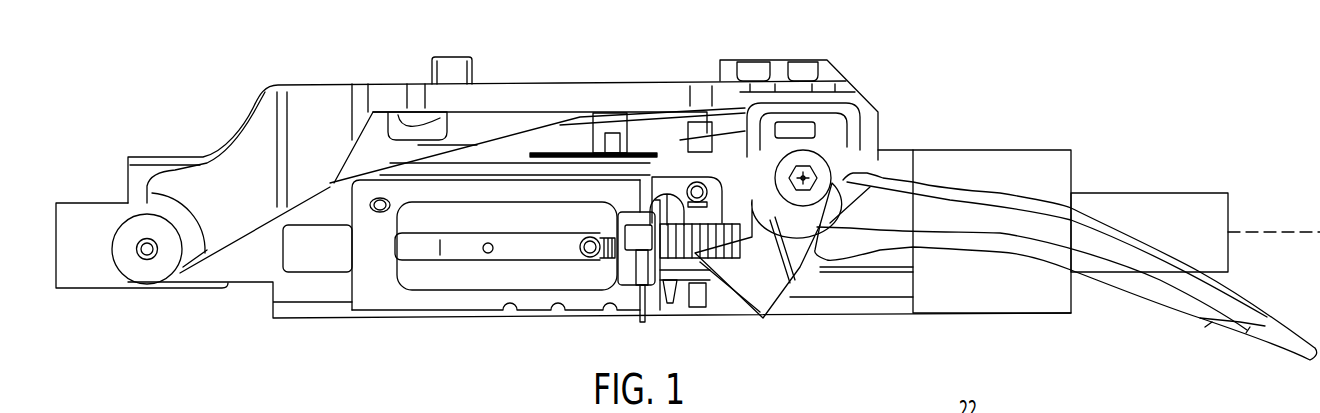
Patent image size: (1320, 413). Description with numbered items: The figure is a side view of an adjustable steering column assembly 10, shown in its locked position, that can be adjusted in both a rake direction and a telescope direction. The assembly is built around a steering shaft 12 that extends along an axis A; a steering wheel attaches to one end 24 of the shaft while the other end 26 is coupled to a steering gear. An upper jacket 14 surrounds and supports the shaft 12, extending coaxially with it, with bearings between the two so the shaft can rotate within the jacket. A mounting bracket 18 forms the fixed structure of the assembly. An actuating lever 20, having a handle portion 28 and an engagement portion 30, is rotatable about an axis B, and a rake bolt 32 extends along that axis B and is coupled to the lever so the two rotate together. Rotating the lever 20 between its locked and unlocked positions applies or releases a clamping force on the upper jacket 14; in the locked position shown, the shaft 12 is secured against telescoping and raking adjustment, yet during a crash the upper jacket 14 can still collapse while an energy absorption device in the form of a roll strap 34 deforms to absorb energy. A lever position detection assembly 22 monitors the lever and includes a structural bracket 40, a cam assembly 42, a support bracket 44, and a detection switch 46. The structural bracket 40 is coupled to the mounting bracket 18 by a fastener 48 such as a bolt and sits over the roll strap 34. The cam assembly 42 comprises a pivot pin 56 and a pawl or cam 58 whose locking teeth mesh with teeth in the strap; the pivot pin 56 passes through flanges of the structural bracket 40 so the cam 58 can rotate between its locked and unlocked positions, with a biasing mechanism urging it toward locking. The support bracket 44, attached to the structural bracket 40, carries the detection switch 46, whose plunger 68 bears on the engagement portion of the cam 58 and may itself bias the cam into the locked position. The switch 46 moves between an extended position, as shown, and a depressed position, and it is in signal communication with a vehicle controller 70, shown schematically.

The adjustable steering column assembly 10 is at (995, 86).
The steering shaft 12 is at (1147, 203).
The upper jacket 14 is at (1025, 160).
The mounting bracket 18 is at (527, 82).
The actuating lever 20 is at (975, 256).
The lever position detection assembly 22 is at (697, 327).
The end 24 is at (1234, 173).
The other end 26 is at (90, 198).
The handle portion 28 is at (1290, 316).
The engagement portion 30 is at (716, 278).
The rake bolt 32 is at (812, 172).
The roll strap 34 is at (603, 255).
The structural bracket 40 is at (373, 297).
The cam assembly 42 is at (737, 215).
The support bracket 44 is at (627, 282).
The detection switch 46 is at (639, 238).
The fastener 48 is at (699, 181).
The pivot pin 56 is at (700, 293).
The cam 58 is at (693, 260).
The plunger 68 is at (664, 225).
The vehicle controller 70 is at (642, 290).
The axis A is at (1272, 229).
The axis B is at (818, 176).